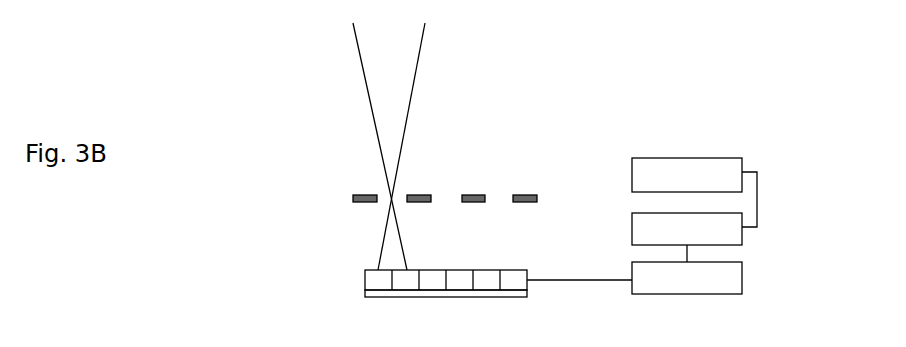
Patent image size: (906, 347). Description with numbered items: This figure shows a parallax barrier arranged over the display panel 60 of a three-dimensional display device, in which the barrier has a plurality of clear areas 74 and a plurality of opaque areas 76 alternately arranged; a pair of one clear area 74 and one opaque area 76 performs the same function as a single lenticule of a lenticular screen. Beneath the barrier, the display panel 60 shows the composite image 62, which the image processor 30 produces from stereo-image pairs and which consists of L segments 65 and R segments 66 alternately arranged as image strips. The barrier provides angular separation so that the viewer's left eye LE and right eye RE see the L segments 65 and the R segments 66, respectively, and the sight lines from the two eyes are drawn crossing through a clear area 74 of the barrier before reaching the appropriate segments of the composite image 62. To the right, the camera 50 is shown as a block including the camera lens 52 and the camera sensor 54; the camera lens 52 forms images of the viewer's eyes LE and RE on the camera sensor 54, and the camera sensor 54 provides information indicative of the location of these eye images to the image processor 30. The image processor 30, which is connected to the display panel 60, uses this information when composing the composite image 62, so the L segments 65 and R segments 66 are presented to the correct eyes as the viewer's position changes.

The right eye RE is at (373, 135).
The left eye LE is at (406, 135).
The opaque areas 76 is at (423, 193).
The clear areas 74 is at (447, 199).
The composite image 62 is at (365, 280).
The L segment 65 is at (478, 277).
The R segment 66 is at (507, 273).
The display panel 60 is at (378, 293).
The camera lens 52 is at (642, 172).
The camera sensor 54 is at (642, 228).
The camera 50 is at (757, 200).
The image processor 30 is at (737, 278).